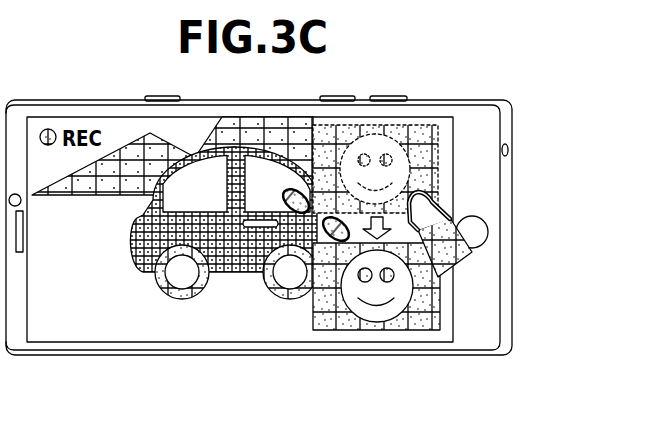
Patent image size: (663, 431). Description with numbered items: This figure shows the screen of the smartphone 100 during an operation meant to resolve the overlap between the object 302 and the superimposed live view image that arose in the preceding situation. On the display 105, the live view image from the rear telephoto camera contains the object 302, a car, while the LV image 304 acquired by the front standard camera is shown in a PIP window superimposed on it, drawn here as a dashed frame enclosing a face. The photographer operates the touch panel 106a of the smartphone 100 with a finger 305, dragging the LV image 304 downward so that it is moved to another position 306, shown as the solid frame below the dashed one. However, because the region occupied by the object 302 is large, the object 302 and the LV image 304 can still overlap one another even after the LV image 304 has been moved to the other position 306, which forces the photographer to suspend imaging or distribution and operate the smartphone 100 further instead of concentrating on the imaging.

The smartphone 100 is at (526, 66).
The display 105 is at (240, 261).
The touch panel 106a is at (105, 343).
The object 302 is at (133, 248).
The LV image 304 is at (427, 125).
The finger 305 is at (452, 221).
The other position 306 is at (375, 331).